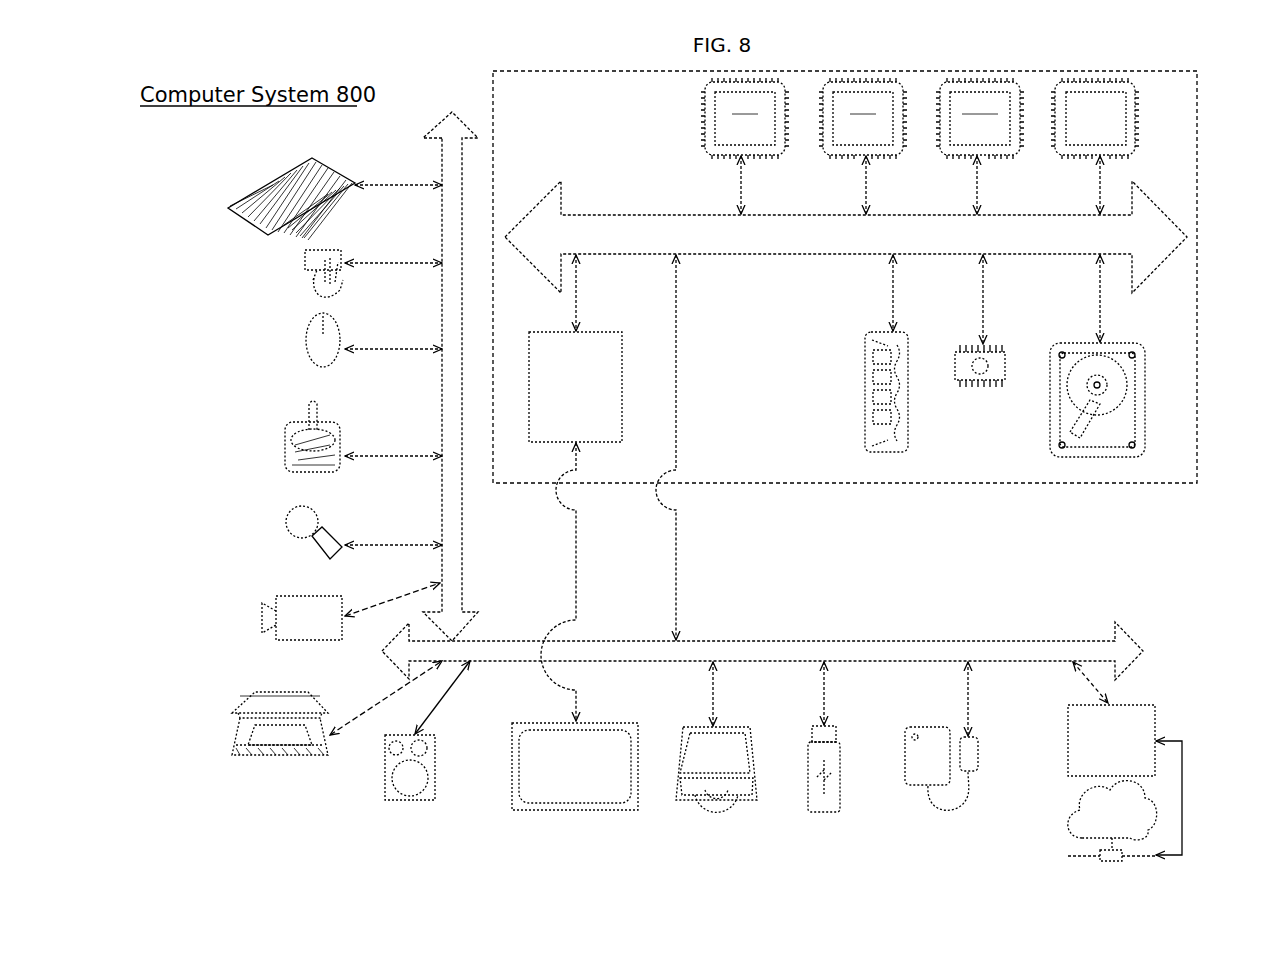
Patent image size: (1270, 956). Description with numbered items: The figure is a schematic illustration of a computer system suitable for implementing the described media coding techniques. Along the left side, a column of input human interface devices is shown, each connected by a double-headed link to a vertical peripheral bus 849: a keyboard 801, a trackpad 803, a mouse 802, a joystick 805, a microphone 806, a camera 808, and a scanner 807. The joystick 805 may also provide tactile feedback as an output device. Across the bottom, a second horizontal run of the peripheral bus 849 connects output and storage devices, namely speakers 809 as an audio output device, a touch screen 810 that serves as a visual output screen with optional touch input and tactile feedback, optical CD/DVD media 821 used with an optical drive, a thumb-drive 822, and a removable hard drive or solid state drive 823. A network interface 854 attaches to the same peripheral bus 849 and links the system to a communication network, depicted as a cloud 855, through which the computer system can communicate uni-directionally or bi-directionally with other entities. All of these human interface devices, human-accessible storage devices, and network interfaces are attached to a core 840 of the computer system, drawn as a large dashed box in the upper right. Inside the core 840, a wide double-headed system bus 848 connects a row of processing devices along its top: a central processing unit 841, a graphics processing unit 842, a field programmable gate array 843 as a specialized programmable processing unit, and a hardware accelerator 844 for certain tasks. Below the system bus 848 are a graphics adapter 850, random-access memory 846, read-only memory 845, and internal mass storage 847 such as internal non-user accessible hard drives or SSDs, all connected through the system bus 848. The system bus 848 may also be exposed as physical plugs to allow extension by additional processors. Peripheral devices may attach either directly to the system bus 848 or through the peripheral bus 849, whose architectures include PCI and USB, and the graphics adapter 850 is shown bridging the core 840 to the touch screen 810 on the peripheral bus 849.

The keyboard 801 is at (255, 205).
The mouse 802 is at (305, 340).
The trackpad 803 is at (300, 265).
The joystick 805 is at (285, 455).
The microphone 806 is at (285, 527).
The scanner 807 is at (240, 735).
The camera 808 is at (262, 618).
The speakers 809 is at (410, 800).
The touch screen 810 is at (573, 810).
The CD/DVD media 821 is at (702, 808).
The thumb-drive 822 is at (822, 813).
The removable hard drive or solid state drive 823 is at (905, 790).
The core 840 is at (836, 483).
The central processing unit 841 is at (712, 160).
The graphics processing unit 842 is at (830, 160).
The field programmable gate array 843 is at (946, 160).
The hardware accelerator 844 is at (1062, 160).
The read-only memory 845 is at (972, 388).
The random-access memory 846 is at (865, 395).
The internal mass storage 847 is at (1060, 343).
The system bus 848 is at (828, 254).
The peripheral bus 849 is at (440, 138).
The graphics adapter 850 is at (622, 417).
The network interface 854 is at (1067, 710).
The network / cloud 855 is at (1078, 830).